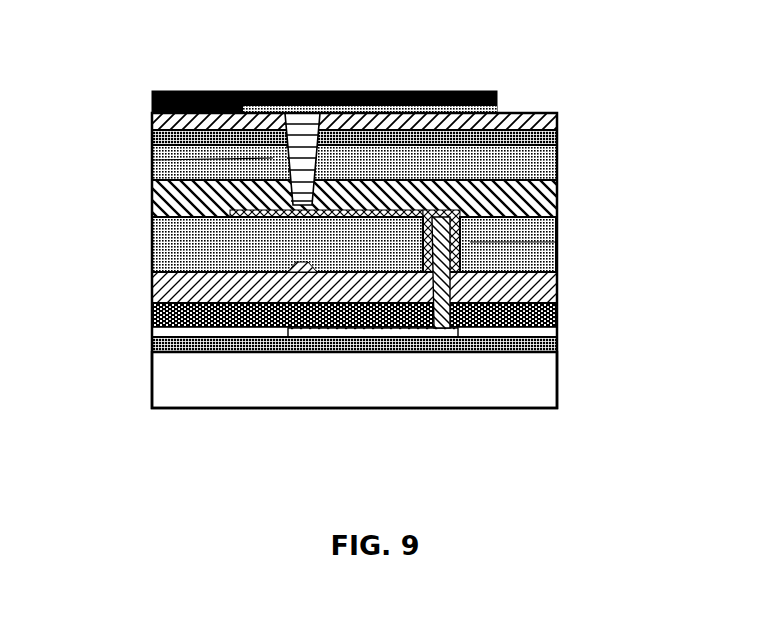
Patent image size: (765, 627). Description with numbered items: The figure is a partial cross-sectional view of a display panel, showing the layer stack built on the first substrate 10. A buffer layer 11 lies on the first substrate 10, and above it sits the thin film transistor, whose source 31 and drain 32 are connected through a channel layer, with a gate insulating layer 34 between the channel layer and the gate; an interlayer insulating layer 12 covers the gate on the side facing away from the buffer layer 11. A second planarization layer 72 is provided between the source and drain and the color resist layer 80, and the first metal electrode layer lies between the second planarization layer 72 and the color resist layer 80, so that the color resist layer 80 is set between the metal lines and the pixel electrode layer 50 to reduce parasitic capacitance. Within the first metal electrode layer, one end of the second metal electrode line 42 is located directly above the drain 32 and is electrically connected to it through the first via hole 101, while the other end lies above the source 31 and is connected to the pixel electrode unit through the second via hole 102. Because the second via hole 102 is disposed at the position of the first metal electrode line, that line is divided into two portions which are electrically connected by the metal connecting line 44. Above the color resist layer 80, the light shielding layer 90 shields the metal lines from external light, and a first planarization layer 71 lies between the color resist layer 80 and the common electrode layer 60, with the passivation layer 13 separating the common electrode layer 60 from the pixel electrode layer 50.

The first substrate 10 is at (557, 402).
The buffer layer 11 is at (557, 344).
The interlayer insulating layer 12 is at (557, 285).
The passivation layer 13 is at (557, 115).
The source 31 is at (310, 273).
The drain 32 is at (443, 352).
The gate insulating layer 34 is at (192, 320).
The second metal electrode line 42 is at (356, 330).
The metal connecting line 44 is at (249, 275).
The pixel electrode layer 50 is at (497, 106).
The common electrode layer 60 is at (152, 139).
The first planarization layer 71 is at (557, 148).
The second planarization layer 72 is at (557, 255).
The color resist layer 80 is at (557, 200).
The light shielding layer 90 is at (383, 90).
The first via hole 101 is at (557, 232).
The second via hole 102 is at (152, 160).